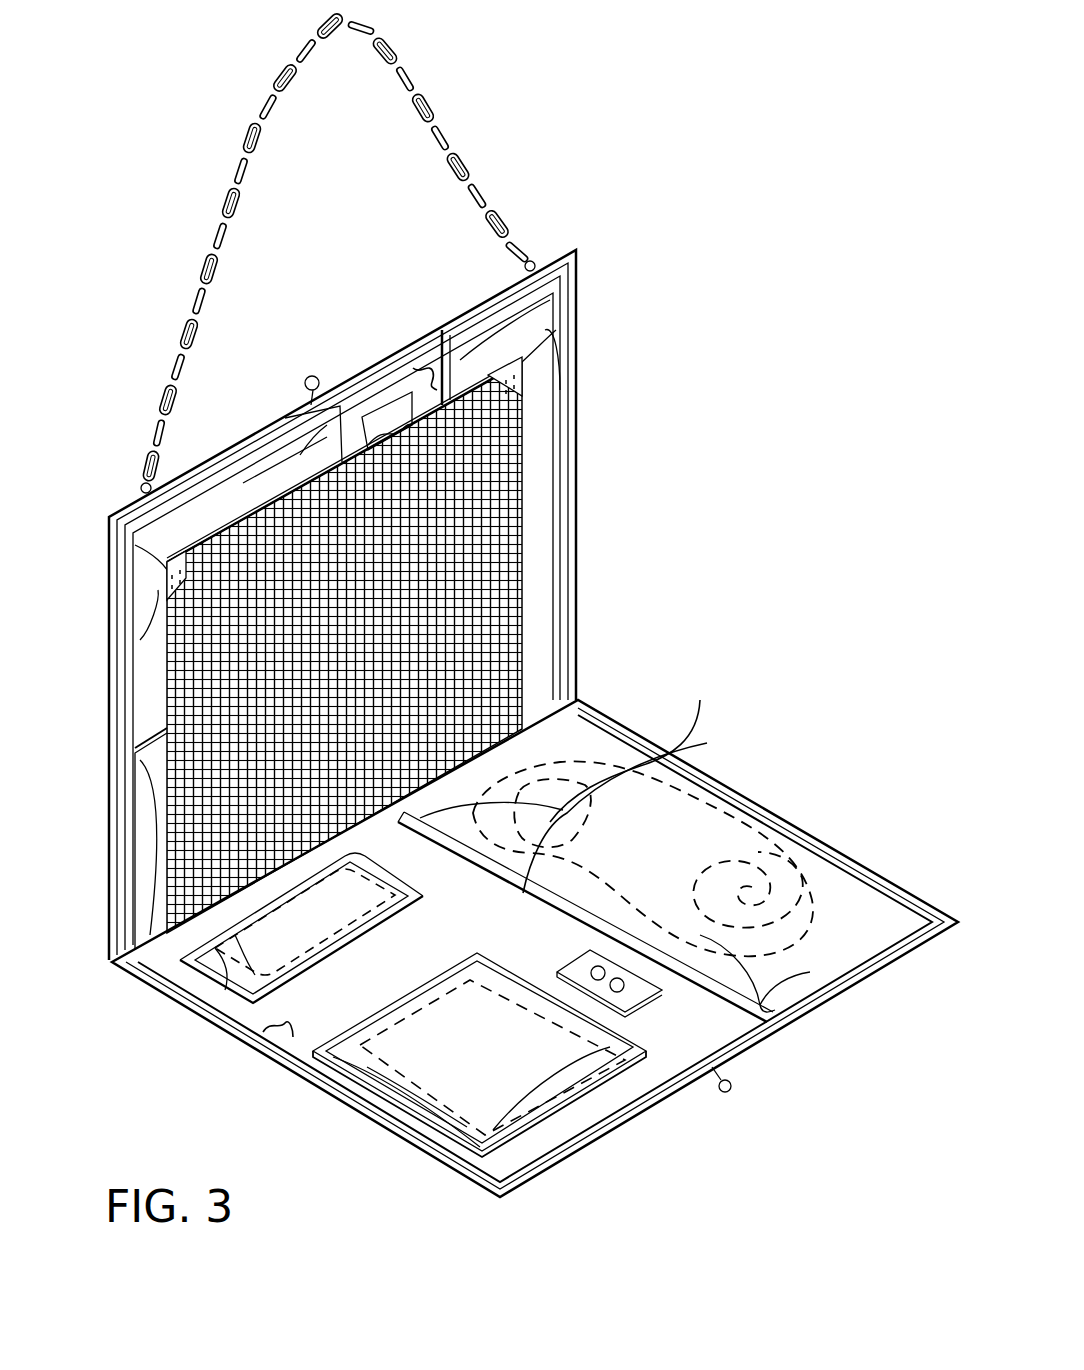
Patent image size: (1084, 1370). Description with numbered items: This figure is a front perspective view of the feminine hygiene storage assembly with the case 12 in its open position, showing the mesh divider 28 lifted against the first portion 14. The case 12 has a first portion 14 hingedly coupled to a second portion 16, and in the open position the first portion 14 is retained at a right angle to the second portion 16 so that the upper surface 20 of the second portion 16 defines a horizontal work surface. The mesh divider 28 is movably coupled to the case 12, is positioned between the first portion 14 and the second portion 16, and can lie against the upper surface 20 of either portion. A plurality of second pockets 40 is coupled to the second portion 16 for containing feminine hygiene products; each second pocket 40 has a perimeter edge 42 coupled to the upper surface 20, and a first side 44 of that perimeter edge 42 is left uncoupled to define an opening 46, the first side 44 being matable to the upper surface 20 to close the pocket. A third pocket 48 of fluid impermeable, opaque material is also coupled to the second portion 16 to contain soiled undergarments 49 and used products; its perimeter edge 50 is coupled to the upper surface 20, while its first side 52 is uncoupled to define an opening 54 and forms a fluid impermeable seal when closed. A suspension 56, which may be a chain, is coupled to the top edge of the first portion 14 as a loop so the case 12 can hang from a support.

The case 12 is at (615, 350).
The first portion 14 is at (98, 622).
The second portion 16 is at (690, 1100).
The upper surface 20 is at (437, 378).
The mesh divider 28 is at (520, 497).
The second pockets 40 is at (260, 997).
The perimeter edge 42 is at (383, 1068).
The first side 44 is at (333, 1040).
The opening 46 is at (422, 970).
The third pocket 48 is at (737, 820).
The soiled undergarments 49 is at (720, 863).
The perimeter edge 50 is at (575, 712).
The first side 52 is at (635, 741).
The opening 54 is at (565, 927).
The suspension 56 is at (238, 157).